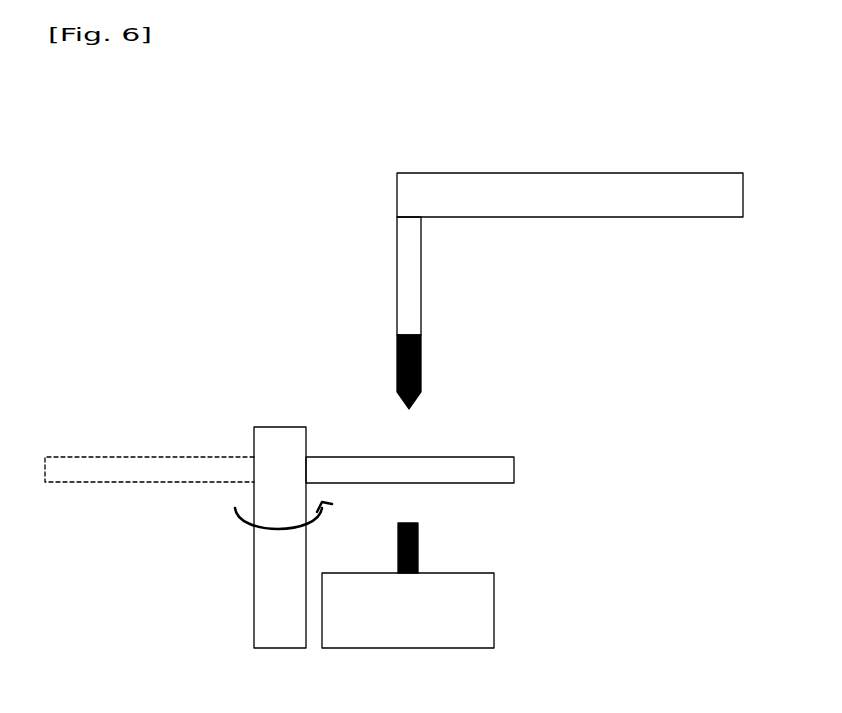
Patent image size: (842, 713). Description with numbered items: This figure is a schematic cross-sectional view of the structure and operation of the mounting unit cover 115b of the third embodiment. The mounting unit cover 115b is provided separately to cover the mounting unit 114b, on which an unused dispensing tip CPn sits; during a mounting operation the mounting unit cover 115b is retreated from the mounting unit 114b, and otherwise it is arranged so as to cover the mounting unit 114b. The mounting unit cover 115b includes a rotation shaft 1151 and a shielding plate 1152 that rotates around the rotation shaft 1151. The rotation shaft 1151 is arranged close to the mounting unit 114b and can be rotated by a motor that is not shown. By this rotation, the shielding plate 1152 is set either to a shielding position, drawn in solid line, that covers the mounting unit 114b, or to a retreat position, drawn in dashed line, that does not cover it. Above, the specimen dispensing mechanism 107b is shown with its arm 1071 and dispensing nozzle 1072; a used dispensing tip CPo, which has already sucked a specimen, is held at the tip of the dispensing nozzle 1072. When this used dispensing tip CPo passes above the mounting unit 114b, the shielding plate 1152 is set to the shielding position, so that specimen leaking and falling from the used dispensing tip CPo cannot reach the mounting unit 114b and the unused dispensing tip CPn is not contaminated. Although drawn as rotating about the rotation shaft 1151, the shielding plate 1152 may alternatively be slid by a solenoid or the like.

The specimen dispensing mechanism 107b is at (604, 145).
The horizontal arm 1071 is at (702, 182).
The dispensing nozzle 1072 is at (421, 277).
The used dispensing tip CPo is at (421, 370).
The mounting unit cover 115b is at (222, 600).
The rotation shaft 1151 is at (275, 432).
The shielding plate 1152 is at (495, 463).
The unused dispensing tip CPn is at (418, 537).
The mounting unit 114b is at (490, 612).